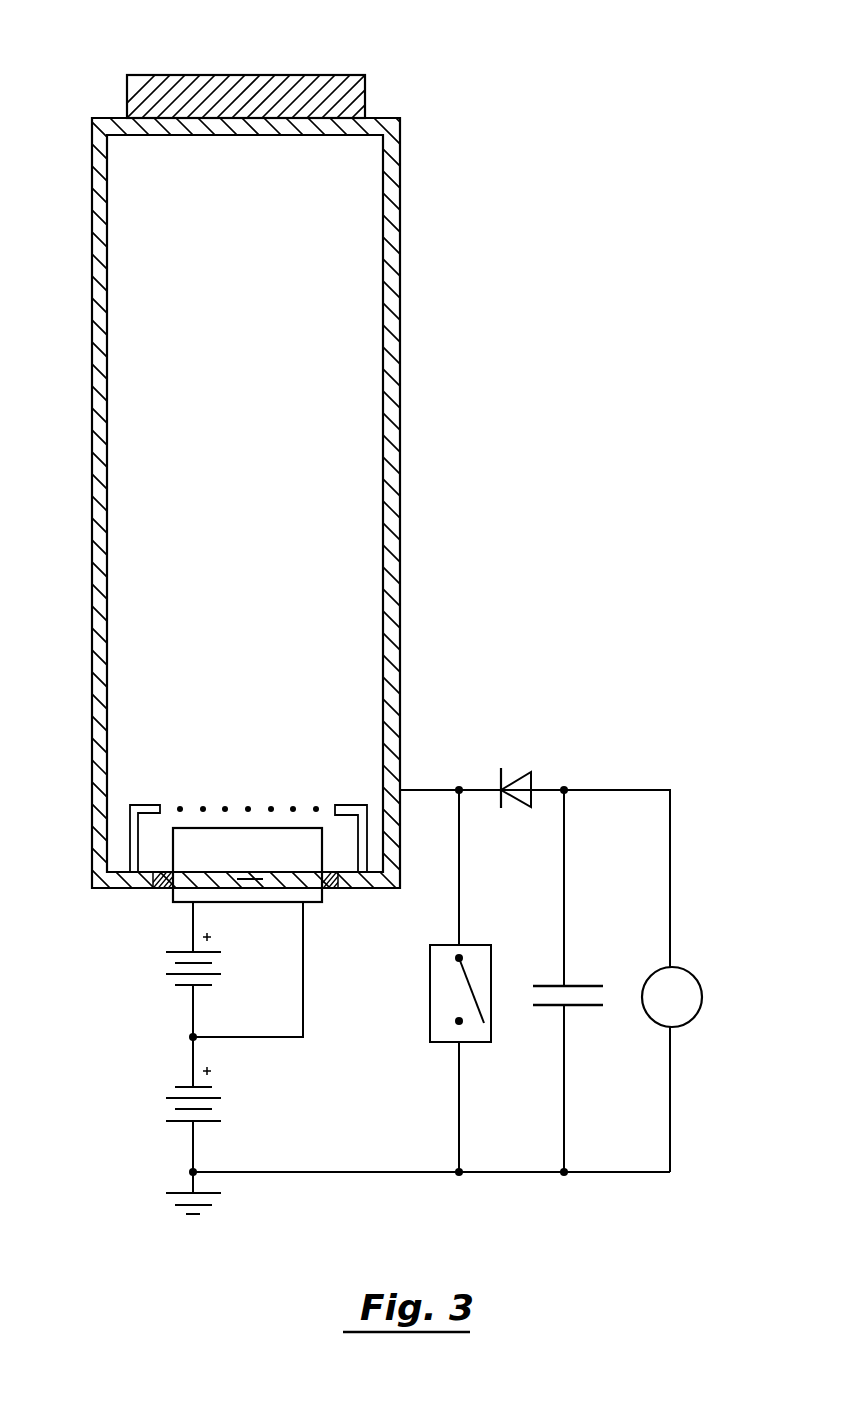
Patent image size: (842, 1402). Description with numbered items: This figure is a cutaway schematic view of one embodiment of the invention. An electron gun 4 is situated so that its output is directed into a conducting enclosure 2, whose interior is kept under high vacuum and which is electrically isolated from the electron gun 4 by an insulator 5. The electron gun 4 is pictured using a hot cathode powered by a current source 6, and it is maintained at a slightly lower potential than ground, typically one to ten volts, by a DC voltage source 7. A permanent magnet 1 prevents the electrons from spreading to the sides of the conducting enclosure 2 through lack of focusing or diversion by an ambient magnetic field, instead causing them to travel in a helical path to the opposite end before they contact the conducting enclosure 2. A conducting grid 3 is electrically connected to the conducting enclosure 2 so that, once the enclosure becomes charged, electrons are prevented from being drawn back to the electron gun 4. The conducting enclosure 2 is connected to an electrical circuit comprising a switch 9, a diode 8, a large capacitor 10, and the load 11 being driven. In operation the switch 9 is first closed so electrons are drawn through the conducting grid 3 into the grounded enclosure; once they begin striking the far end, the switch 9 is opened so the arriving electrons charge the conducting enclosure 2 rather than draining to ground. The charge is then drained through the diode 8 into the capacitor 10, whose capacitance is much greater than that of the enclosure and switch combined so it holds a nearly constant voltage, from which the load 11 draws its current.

The permanent magnet 1 is at (328, 75).
The conducting enclosure 2 is at (400, 308).
The conducting grid 3 is at (148, 805).
The electron gun 4 is at (247, 865).
The insulator 5 is at (165, 888).
The current source 6 is at (177, 975).
The DC voltage source 7 is at (177, 1097).
The diode 8 is at (516, 778).
The switch 9 is at (491, 963).
The capacitor 10 is at (573, 986).
The load 11 is at (695, 975).